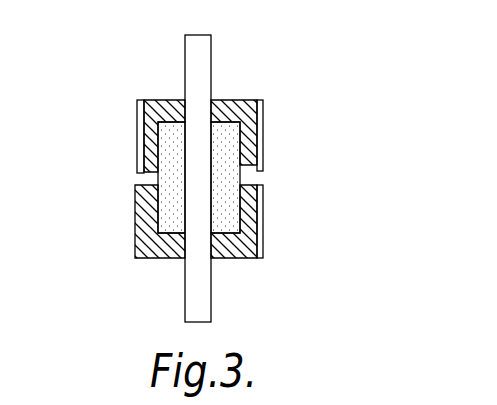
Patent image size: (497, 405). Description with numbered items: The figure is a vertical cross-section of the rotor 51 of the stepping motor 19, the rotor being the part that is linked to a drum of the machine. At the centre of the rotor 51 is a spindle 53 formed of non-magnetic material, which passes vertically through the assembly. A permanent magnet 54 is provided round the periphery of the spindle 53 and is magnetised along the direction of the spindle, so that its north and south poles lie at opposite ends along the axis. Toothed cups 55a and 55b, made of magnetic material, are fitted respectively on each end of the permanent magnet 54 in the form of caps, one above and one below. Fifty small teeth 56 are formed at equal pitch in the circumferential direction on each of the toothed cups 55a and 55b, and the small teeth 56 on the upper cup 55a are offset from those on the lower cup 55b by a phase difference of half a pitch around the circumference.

The stepping motor 19 is at (262, 177).
The rotor 51 is at (203, 145).
The spindle 53 is at (210, 68).
The permanent magnet 54 is at (243, 178).
The toothed cup 55a is at (137, 123).
The toothed cup 55b is at (135, 245).
The small teeth 56 is at (263, 142).